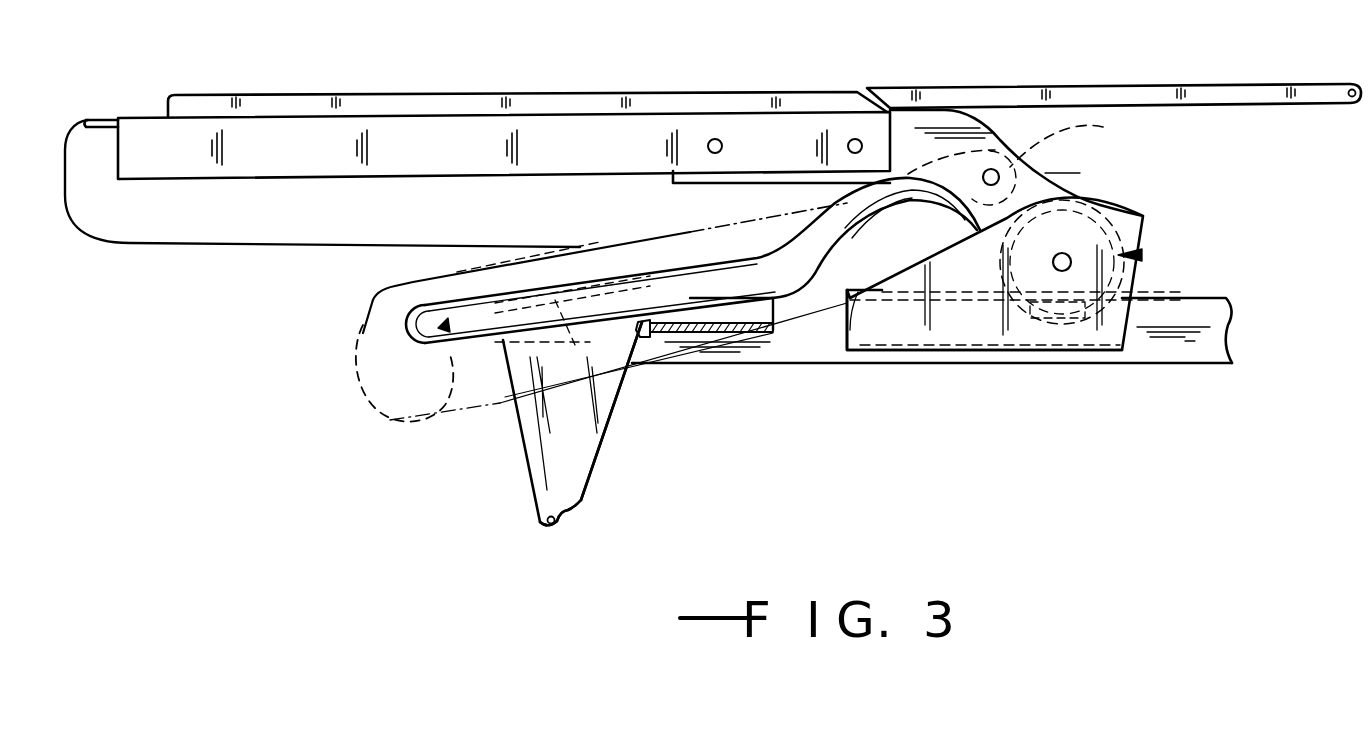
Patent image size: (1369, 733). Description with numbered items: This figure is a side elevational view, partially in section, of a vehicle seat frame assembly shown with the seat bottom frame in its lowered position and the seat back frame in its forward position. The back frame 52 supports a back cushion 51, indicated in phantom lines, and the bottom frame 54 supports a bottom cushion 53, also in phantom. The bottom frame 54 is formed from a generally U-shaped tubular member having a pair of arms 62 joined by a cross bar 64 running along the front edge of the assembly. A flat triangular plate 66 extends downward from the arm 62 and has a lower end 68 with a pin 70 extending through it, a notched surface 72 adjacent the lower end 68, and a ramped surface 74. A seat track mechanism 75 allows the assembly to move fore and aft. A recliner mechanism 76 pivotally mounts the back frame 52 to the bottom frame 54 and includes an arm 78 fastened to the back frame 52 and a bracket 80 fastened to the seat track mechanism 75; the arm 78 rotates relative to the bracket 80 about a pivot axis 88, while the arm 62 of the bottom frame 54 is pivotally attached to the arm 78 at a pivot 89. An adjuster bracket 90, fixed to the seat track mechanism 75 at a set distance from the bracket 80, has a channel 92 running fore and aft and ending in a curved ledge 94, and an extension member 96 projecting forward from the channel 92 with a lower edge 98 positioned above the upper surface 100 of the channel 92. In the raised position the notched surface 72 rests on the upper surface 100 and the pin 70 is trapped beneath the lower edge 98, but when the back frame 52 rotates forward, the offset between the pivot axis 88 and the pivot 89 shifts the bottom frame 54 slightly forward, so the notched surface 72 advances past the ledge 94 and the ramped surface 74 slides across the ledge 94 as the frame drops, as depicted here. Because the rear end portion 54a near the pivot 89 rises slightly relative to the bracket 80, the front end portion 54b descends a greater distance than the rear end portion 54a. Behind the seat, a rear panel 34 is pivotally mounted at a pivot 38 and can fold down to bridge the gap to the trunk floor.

The rear panel 34 is at (1132, 88).
The pivot 38 is at (1354, 85).
The back cushion 51 is at (277, 245).
The back frame 52 is at (467, 93).
The bottom cushion 53 is at (370, 300).
The bottom frame 54 is at (828, 285).
The rear end portion 54a is at (1036, 144).
The front end portion 54b is at (360, 362).
The arm 62 is at (693, 283).
The cross bar 64 is at (450, 360).
The plate 66 is at (533, 435).
The lower end 68 is at (548, 530).
The pin 70 is at (545, 520).
The notched surface 72 is at (568, 513).
The ramped surface 74 is at (612, 425).
The seat track mechanism 75 is at (1180, 360).
The recliner mechanism 76 is at (1140, 255).
The arm 78 is at (1055, 172).
The bracket 80 is at (960, 278).
The pivot axis 88 is at (1070, 255).
The pivot 89 is at (993, 168).
The adjuster bracket 90 is at (778, 322).
The channel 92 is at (754, 318).
The curved ledge 94 is at (640, 332).
The extension member 96 is at (563, 292).
The lower edge 98 is at (490, 347).
The upper surface 100 is at (696, 318).